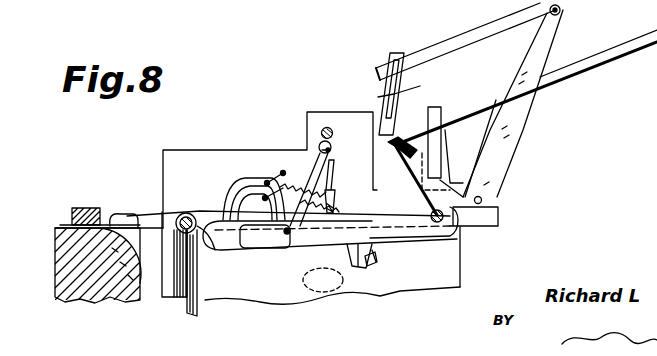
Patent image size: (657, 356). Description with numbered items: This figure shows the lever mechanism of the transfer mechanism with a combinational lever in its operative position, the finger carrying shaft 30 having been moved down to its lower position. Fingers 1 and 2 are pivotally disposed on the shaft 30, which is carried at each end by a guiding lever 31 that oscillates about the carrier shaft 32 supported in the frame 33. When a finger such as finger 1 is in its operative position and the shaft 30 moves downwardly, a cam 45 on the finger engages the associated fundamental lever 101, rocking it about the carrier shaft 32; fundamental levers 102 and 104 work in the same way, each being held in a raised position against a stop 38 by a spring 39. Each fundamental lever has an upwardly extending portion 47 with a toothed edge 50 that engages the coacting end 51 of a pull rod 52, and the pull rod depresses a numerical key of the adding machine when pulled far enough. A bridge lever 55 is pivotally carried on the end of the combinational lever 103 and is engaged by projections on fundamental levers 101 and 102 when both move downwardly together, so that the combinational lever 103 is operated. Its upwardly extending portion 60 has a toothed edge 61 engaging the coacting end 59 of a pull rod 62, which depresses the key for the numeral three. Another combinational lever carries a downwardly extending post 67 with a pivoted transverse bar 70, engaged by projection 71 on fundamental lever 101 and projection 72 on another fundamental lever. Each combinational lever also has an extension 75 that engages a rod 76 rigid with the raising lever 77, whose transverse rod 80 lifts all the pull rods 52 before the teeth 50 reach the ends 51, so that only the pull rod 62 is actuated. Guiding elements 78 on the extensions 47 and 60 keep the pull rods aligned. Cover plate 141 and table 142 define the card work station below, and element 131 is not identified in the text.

The finger 1 is at (172, 262).
The finger 2 is at (126, 214).
The shaft 30 is at (168, 212).
The guiding lever 31 is at (191, 150).
The carrier shaft 32 is at (437, 241).
The frame 33 is at (450, 257).
The stop 38 is at (336, 178).
The spring 39 is at (300, 150).
The cam 45 is at (192, 316).
The upwardly extending portion 47 is at (380, 97).
The toothed edge 50 is at (378, 88).
The end 51 is at (372, 74).
The pull rod 52 is at (510, 16).
The bridge lever 55 is at (235, 260).
The coacting end 59 is at (392, 140).
The upwardly extending portion 60 is at (450, 175).
The toothed edge 61 is at (410, 152).
The pull rod 62 is at (488, 110).
The post 67 is at (374, 268).
The transverse bar 70 is at (364, 268).
The projection 71 is at (346, 252).
The projection 72 is at (323, 280).
The extension 75 is at (499, 216).
The rod 76 is at (484, 200).
The raising lever 77 is at (522, 128).
The guiding element 78 is at (416, 32).
The transverse rod 80 is at (560, 10).
The fundamental lever 101 is at (298, 252).
The fundamental lever 102 is at (220, 205).
The combinational lever 103 is at (238, 250).
The fundamental lever 104 is at (263, 182).
The foot 131 is at (178, 303).
The cover plate 141 is at (84, 208).
The table 142 is at (70, 262).